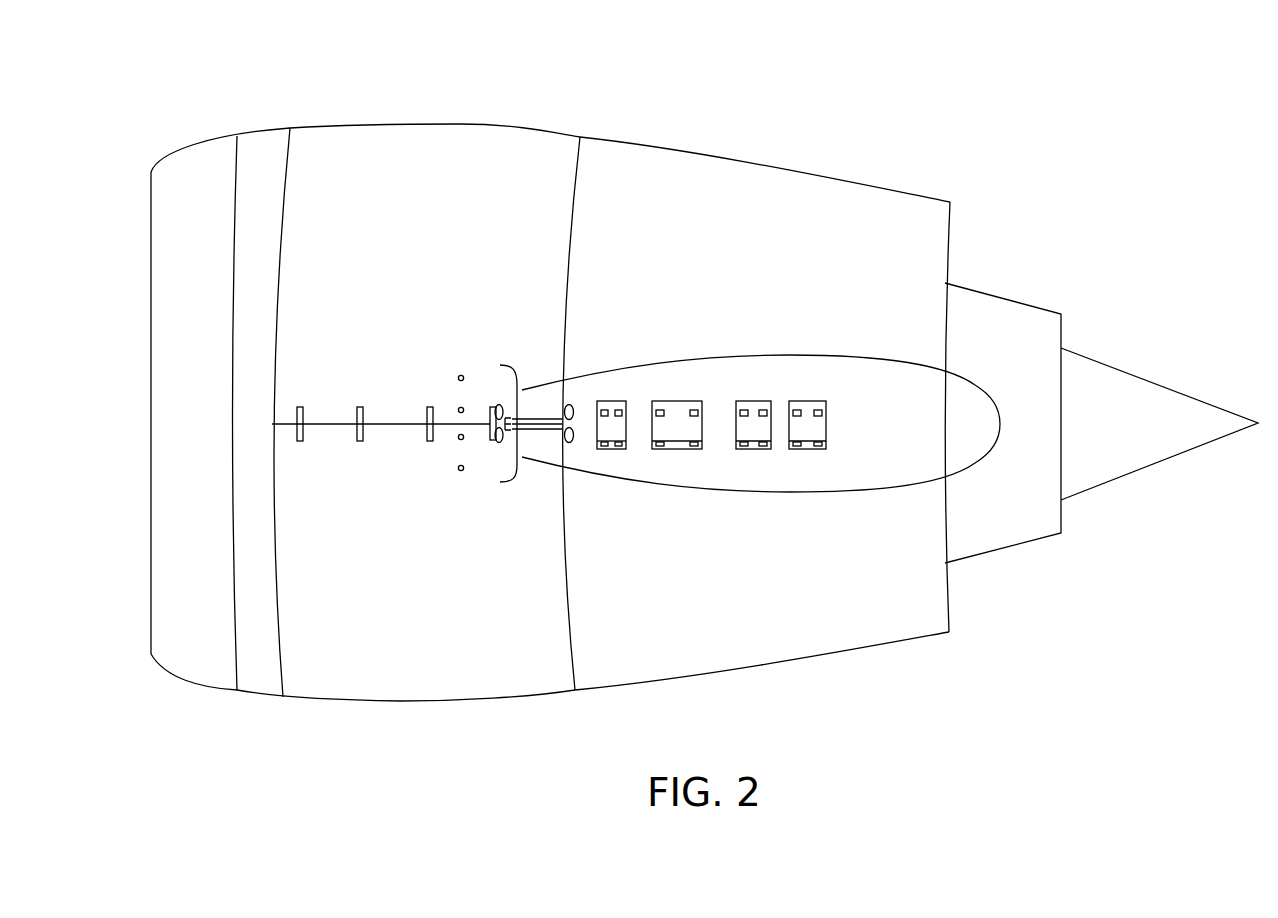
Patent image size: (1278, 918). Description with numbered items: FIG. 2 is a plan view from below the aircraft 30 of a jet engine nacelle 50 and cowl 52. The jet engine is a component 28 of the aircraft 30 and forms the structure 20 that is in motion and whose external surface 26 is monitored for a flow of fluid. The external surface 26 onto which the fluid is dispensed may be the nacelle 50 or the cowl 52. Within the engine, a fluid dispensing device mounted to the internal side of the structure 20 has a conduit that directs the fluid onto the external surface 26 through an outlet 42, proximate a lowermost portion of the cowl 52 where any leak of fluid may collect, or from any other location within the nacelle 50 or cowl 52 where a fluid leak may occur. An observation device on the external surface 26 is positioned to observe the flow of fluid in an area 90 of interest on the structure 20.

The structure 20 is at (453, 703).
The external surface 26 is at (393, 660).
The component 28 is at (839, 661).
The aircraft 30 is at (156, 107).
The outlet 42 is at (393, 421).
The nacelle 50 is at (636, 134).
The cowl 52 is at (365, 147).
The area of interest 90 is at (520, 392).